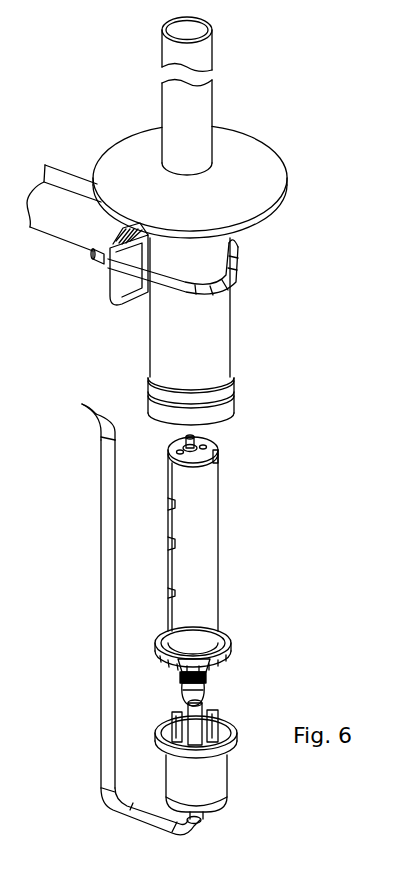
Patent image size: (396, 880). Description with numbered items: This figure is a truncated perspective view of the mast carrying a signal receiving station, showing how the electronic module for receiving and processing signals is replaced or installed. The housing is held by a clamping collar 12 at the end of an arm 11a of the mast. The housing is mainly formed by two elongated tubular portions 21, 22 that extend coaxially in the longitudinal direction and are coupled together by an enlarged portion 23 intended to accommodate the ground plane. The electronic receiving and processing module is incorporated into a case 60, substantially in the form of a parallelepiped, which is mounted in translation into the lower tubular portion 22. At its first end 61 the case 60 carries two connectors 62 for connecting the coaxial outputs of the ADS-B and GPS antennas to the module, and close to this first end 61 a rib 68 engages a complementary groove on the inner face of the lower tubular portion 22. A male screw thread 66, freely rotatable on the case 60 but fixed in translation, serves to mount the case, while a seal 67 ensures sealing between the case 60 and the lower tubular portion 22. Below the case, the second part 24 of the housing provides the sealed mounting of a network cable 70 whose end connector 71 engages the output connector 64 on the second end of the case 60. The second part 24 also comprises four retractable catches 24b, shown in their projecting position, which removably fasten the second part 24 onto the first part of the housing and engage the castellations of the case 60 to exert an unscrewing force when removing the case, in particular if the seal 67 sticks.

The arm 11a is at (60, 227).
The clamping collar 12 is at (240, 254).
The tubular portion 21 is at (203, 100).
The lower tubular portion 22 is at (218, 313).
The enlarged portion 23 is at (265, 155).
The second part of the housing 24 is at (225, 786).
The retractable catches 24b is at (208, 712).
The case 60 is at (207, 526).
The first end 61 is at (213, 465).
The connectors 62 is at (195, 436).
The output connector 64 is at (181, 674).
The male screw thread 66 is at (230, 655).
The seal 67 is at (214, 632).
The rib 68 is at (218, 453).
The network cable 70 is at (100, 490).
The connector 71 is at (198, 691).